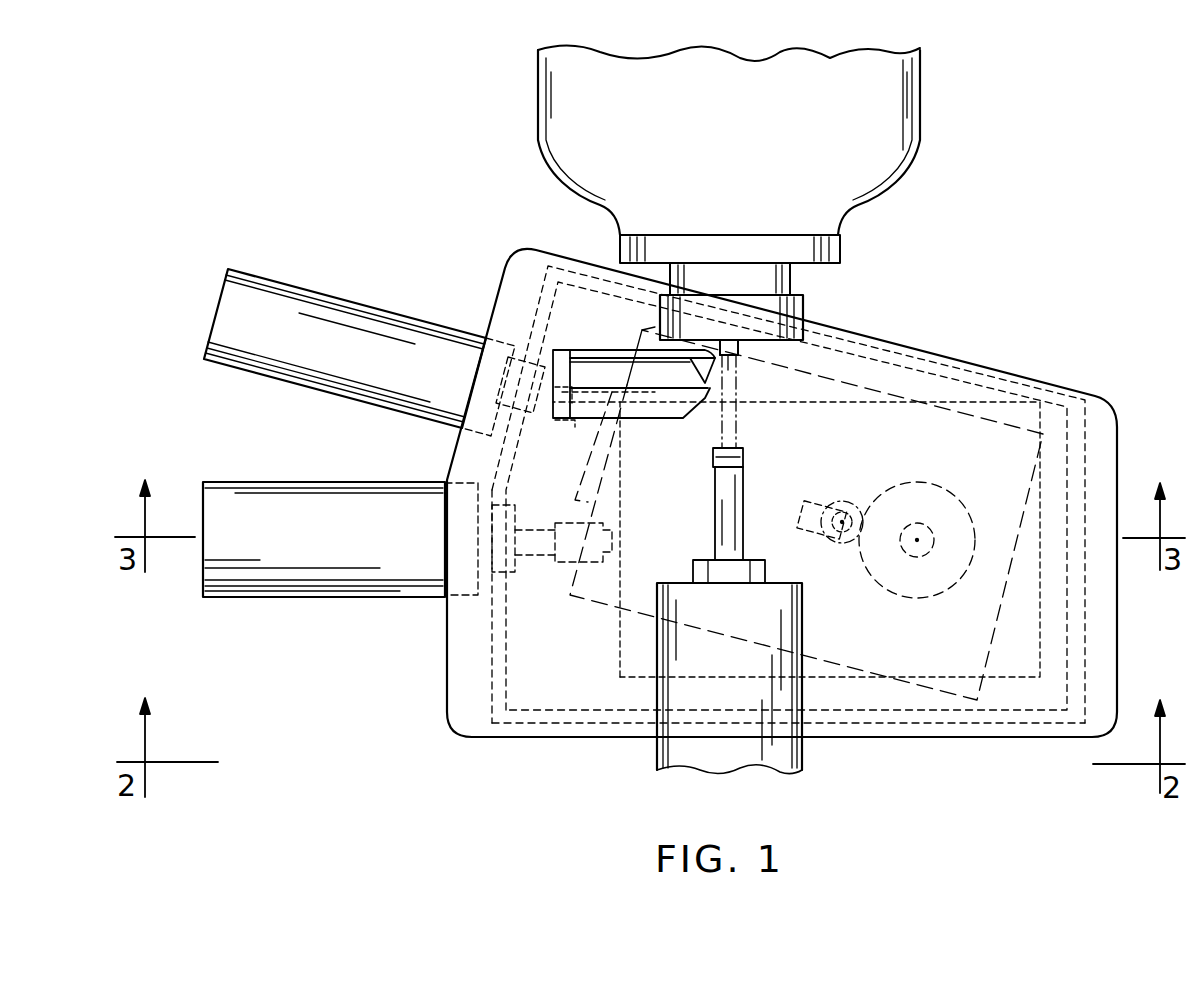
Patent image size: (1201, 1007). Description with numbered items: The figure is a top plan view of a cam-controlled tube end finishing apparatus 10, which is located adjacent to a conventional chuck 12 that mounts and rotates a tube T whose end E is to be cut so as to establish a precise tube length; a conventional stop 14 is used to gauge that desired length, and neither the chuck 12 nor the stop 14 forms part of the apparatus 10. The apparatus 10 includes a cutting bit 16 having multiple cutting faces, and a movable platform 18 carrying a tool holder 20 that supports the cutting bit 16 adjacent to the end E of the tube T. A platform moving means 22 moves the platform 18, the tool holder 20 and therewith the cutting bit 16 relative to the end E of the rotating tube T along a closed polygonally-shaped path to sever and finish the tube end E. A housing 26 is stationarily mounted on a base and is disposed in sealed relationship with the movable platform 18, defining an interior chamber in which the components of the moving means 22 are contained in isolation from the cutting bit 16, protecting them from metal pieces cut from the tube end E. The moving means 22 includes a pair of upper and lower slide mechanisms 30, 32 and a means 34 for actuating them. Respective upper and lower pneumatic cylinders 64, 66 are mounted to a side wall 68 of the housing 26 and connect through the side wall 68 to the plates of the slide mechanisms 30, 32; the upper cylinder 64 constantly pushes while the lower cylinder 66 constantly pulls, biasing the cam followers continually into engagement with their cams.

The cam-controlled tube end finishing apparatus 10 is at (1055, 282).
The chuck 12 is at (922, 113).
The stop 14 is at (713, 493).
The cutting bit 16 is at (712, 365).
The movable platform 18 is at (1105, 398).
The tool holder 20 is at (604, 350).
The platform moving means 22 is at (928, 360).
The housing 26 is at (490, 716).
The upper slide mechanism 30 is at (602, 599).
The lower slide mechanism 32 is at (842, 678).
The means for actuating the upper and lower slide mechanisms 34 is at (937, 480).
The upper pneumatic cylinder 64 is at (388, 305).
The lower pneumatic cylinder 66 is at (388, 482).
The side wall 68 is at (490, 665).
The tube T is at (722, 340).
The end E is at (732, 355).